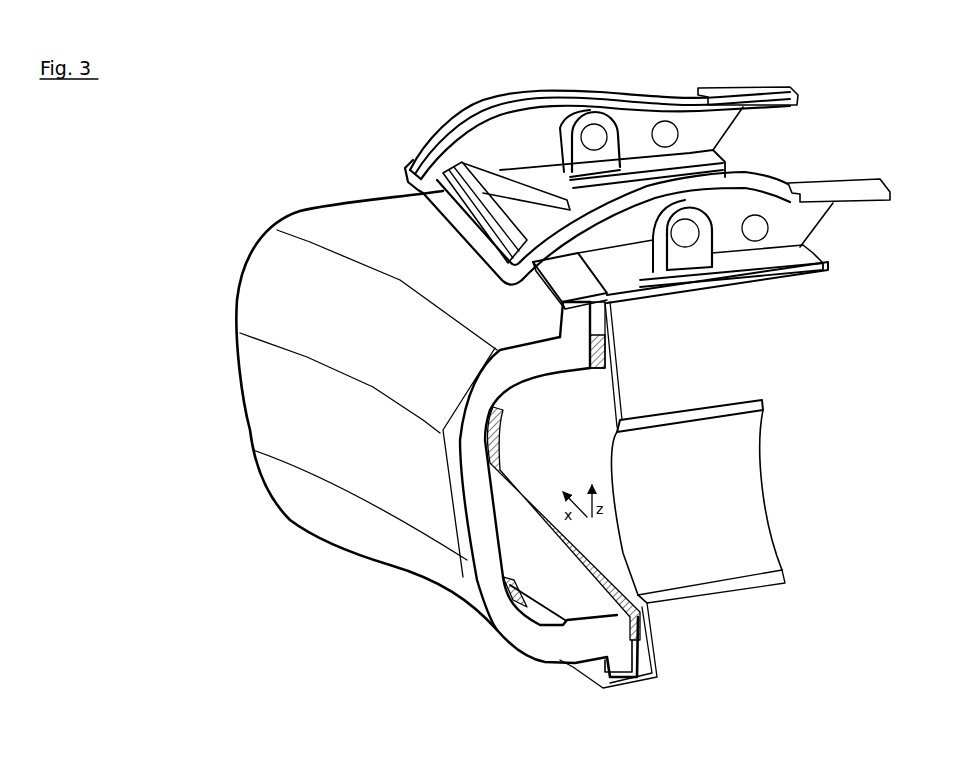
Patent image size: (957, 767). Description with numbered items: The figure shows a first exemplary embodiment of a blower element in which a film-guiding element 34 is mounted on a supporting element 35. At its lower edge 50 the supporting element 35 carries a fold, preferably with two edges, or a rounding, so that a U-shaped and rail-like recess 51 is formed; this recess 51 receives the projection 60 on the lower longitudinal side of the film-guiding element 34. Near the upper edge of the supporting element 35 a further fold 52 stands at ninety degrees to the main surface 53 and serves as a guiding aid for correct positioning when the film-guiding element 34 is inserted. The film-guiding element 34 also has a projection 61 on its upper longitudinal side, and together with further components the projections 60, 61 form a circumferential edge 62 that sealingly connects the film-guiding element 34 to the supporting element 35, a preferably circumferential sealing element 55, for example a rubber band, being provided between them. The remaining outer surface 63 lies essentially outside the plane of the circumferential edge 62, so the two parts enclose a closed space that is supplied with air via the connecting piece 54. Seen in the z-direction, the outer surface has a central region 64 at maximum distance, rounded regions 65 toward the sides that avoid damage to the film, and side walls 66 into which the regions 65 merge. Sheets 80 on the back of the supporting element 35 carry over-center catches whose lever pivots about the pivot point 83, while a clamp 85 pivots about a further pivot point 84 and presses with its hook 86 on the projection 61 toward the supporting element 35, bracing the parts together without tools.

The film-guiding element 34 is at (345, 578).
The supporting element 35 is at (640, 392).
The lower edge 50 is at (702, 706).
The recess 51 is at (652, 657).
The fold 52 is at (565, 262).
The main surface 53 is at (622, 318).
The connecting piece 54 is at (738, 480).
The sealing element 55 is at (650, 614).
The projection 60 is at (622, 662).
The projection 61 is at (628, 328).
The circumferential edge 62 is at (563, 387).
The outer surface 63 is at (270, 405).
The region 64 is at (360, 505).
The regions 65 is at (513, 466).
The side walls 66 is at (365, 210).
The sheets 80 is at (738, 168).
The pivot point 83 is at (594, 135).
The pivot point 84 is at (665, 130).
The clamp 85 is at (527, 100).
The hook 86 is at (430, 170).